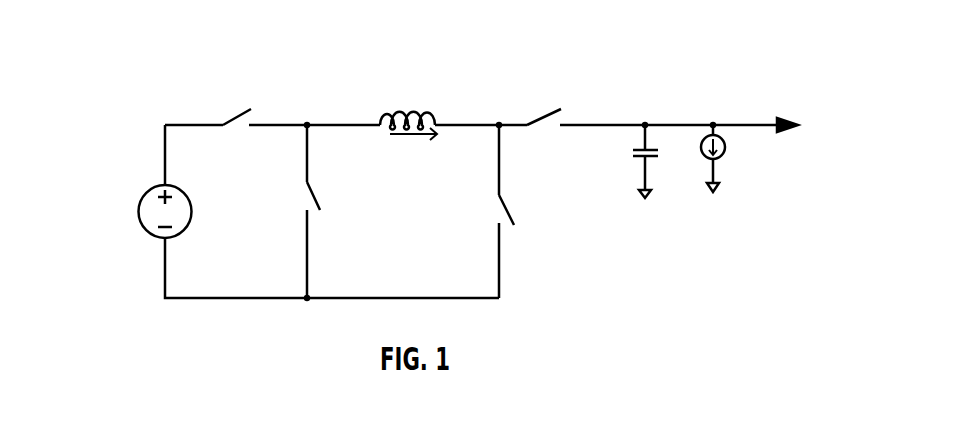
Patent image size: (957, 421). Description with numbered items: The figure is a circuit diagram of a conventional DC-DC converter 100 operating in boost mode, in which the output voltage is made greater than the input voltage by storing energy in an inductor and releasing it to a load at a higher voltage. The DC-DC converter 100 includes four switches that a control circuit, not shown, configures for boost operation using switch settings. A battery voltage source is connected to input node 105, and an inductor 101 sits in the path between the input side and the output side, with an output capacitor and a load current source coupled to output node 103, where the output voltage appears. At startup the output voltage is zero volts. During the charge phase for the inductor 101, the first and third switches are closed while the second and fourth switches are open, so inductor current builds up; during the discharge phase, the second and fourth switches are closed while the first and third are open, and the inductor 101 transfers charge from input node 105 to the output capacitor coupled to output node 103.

The DC-DC converter 100 is at (127, 60).
The inductor 101 is at (430, 112).
The output node 103 is at (807, 115).
The input node 105 is at (163, 183).